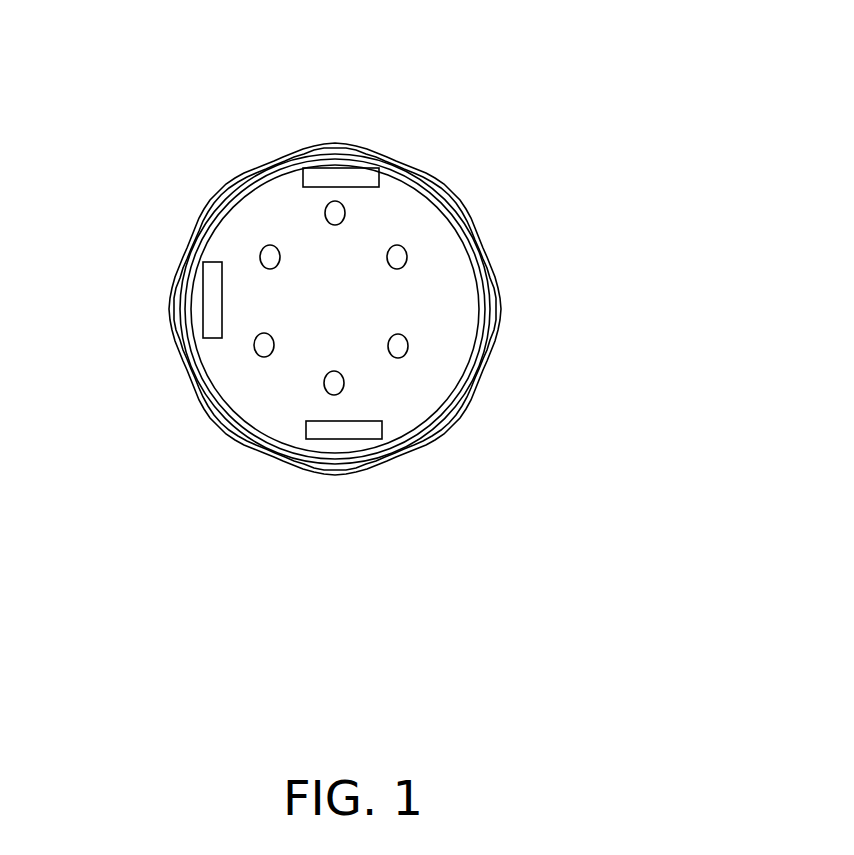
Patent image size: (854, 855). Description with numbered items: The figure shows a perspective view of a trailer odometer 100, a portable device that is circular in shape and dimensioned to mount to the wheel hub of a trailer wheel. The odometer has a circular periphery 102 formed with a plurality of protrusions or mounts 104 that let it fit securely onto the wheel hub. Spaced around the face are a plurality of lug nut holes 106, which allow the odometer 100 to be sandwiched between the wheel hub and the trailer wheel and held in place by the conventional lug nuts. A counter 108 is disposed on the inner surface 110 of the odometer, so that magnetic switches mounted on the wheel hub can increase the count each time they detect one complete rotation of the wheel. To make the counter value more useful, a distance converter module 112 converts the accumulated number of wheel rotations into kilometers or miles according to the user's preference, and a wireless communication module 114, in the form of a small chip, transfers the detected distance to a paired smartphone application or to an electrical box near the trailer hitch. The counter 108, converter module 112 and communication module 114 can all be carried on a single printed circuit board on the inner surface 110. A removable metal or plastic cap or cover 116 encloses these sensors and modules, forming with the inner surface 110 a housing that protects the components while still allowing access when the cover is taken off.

The trailer odometer 100 is at (272, 133).
The circular periphery 102 is at (493, 328).
The protrusions or mounts 104 is at (482, 243).
The lug nut holes 106 is at (398, 358).
The counter 108 is at (365, 182).
The inner surface 110 is at (445, 343).
The distance converter module 112 is at (342, 435).
The wireless communication module 114 is at (215, 287).
The cap or cover 116 is at (168, 265).